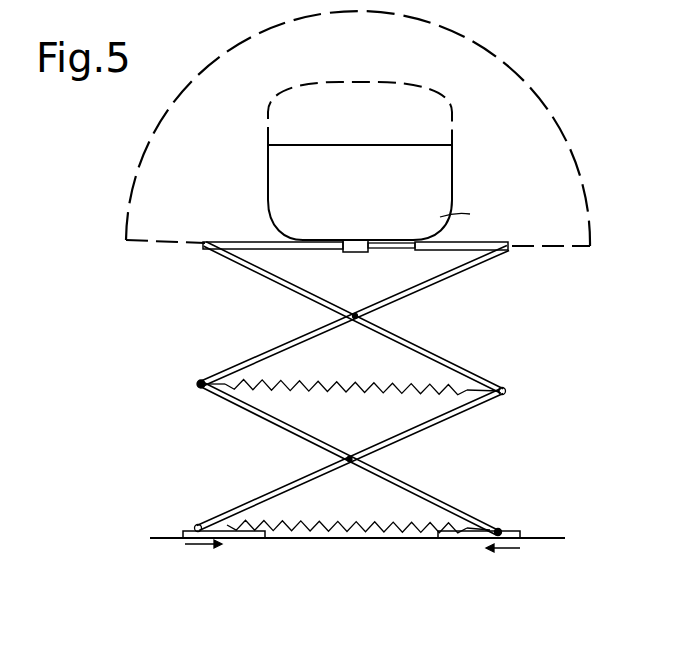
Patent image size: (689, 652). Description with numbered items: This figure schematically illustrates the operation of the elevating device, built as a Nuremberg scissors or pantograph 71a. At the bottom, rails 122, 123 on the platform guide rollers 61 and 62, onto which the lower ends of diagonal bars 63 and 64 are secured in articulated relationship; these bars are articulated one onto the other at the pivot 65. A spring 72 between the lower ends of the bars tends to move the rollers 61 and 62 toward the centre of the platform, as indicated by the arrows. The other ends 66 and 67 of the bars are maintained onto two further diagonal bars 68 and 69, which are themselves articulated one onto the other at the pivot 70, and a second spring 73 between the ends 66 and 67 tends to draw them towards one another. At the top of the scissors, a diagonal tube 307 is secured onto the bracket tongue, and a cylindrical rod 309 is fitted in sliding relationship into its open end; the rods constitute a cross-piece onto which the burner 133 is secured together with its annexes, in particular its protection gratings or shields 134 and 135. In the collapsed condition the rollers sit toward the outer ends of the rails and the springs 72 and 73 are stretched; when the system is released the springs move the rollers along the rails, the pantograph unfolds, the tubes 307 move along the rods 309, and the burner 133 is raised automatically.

The protection grating or shield 134 is at (532, 74).
The protection grating or shield 135 is at (318, 88).
The burner 133 is at (453, 190).
The diagonal tube 307 is at (258, 243).
The cylindrical rod 309 is at (308, 251).
The diagonal bar 69 is at (280, 289).
The diagonal bar 68 is at (443, 281).
The articulation 70 is at (355, 320).
The end of diagonal bar 66 is at (200, 387).
The end of diagonal bar 67 is at (504, 394).
The second spring 73 is at (337, 391).
The pantograph 71a is at (367, 424).
The diagonal bar 64 is at (428, 490).
The diagonal bar 63 is at (278, 485).
The articulation 65 is at (349, 462).
The roller 61 is at (196, 524).
The roller 62 is at (499, 528).
The spring 72 is at (363, 541).
The rail 122 is at (235, 540).
The rail 123 is at (480, 545).